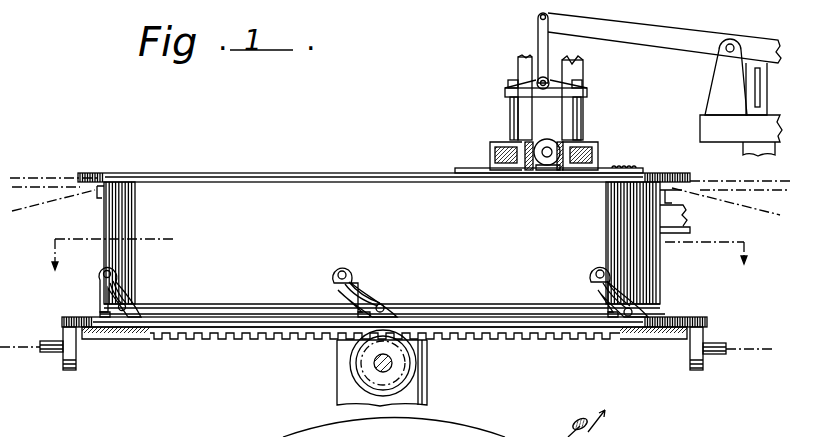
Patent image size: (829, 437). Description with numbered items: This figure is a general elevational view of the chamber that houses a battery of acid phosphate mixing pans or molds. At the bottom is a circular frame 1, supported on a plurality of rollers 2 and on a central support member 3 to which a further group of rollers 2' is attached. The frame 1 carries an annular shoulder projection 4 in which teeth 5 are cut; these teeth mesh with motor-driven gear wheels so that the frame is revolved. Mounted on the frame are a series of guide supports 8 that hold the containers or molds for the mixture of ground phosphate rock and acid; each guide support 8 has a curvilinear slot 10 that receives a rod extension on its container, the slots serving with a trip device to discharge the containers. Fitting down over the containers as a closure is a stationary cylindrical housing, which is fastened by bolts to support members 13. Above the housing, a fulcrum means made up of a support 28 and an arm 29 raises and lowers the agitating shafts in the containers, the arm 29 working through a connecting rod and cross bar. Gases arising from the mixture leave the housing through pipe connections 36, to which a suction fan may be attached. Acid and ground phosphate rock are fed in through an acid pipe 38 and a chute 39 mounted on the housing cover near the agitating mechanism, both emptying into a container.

The circular frame 1 is at (62, 322).
The rollers 2 is at (387, 364).
The rollers 2' is at (409, 363).
The central support member 3 is at (427, 392).
The annular shoulder projection 4 is at (498, 338).
The teeth 5 is at (213, 341).
The guide supports 8 is at (100, 295).
The curvilinear slots 10 is at (366, 297).
The support members 13 is at (32, 178).
The support 28 is at (718, 83).
The arm 29 is at (657, 30).
The pipe connections 36 is at (695, 220).
The acid pipe 38 is at (518, 62).
The chute 39 is at (585, 70).